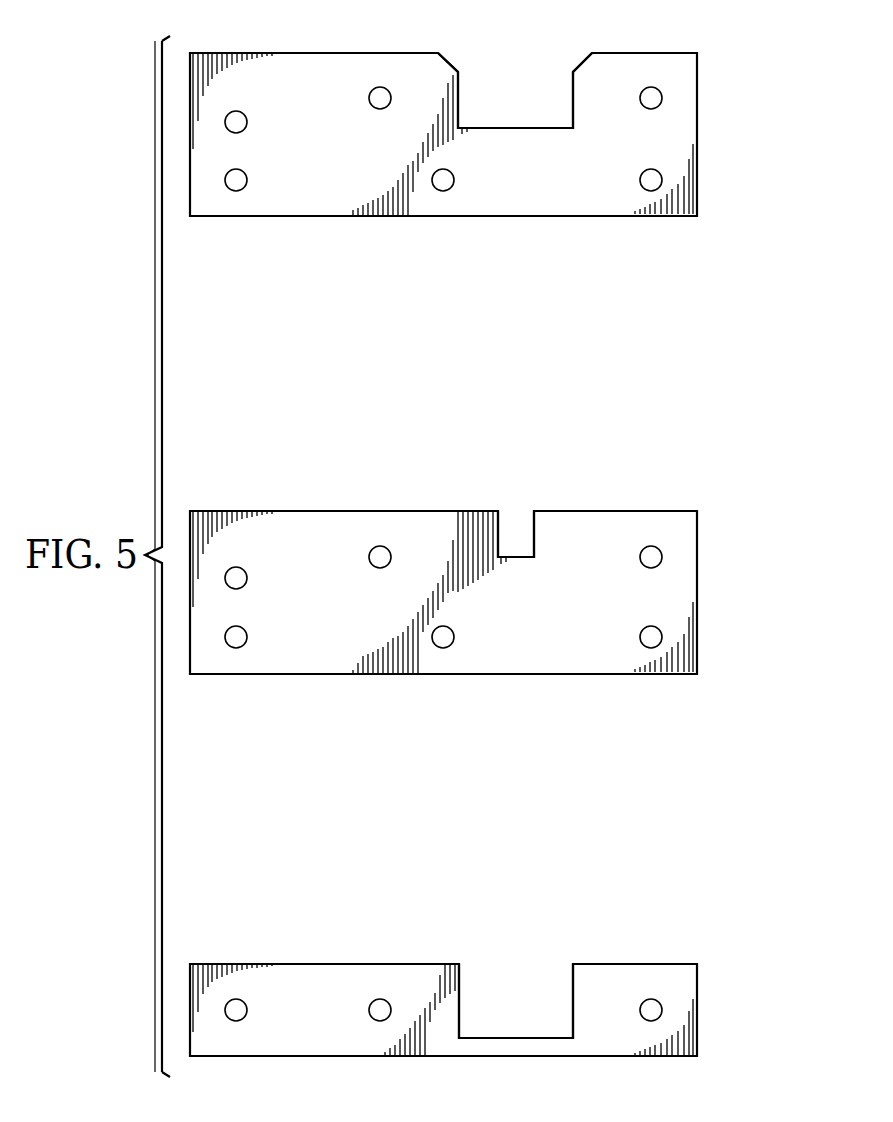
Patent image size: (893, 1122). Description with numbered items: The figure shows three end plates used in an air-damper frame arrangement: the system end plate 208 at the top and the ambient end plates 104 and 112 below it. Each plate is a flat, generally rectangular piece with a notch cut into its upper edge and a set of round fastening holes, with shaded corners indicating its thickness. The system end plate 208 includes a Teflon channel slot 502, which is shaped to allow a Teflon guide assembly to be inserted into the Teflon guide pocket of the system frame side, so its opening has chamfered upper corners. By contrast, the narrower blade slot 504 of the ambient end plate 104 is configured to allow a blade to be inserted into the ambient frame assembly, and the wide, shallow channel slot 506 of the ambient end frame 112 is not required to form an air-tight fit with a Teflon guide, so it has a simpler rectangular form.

The system end plate 208 is at (698, 133).
The Teflon channel slot 502 is at (572, 92).
The ambient end plate 104 is at (698, 593).
The blade slot 504 is at (533, 535).
The ambient end frame 112 is at (698, 1008).
The channel slot 506 is at (572, 987).